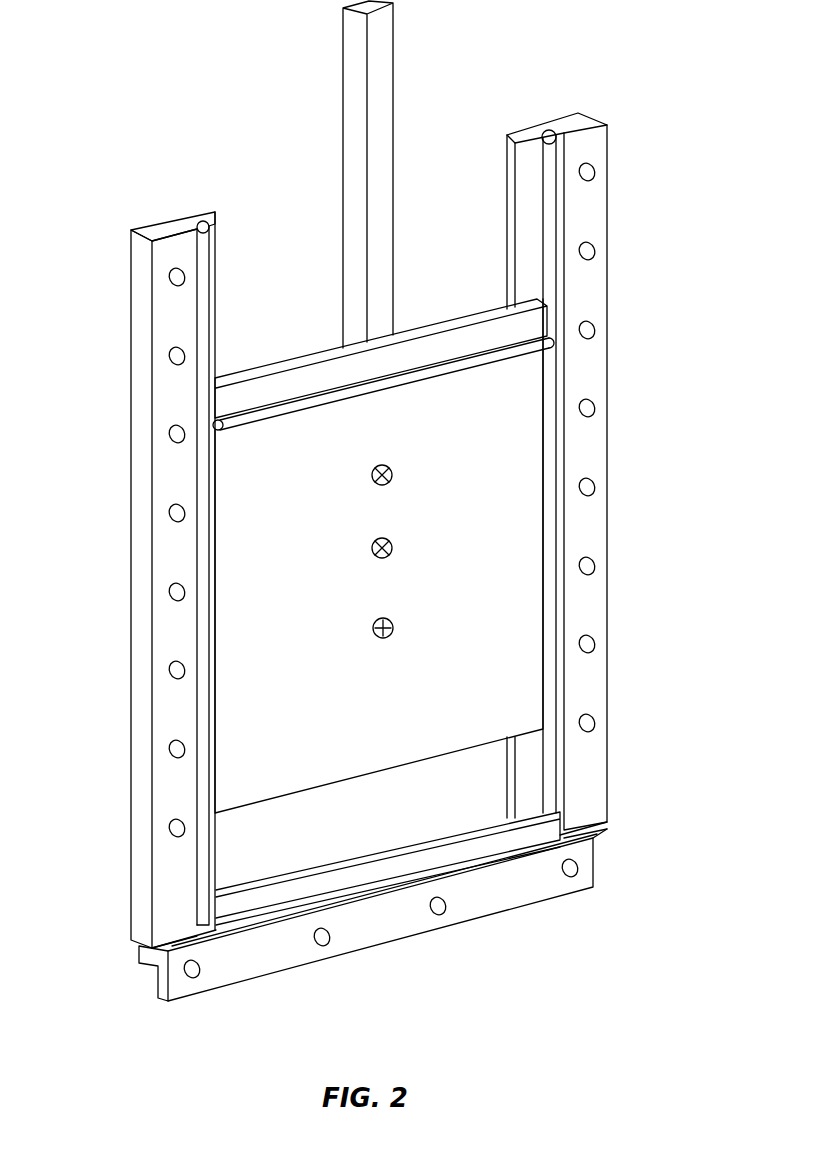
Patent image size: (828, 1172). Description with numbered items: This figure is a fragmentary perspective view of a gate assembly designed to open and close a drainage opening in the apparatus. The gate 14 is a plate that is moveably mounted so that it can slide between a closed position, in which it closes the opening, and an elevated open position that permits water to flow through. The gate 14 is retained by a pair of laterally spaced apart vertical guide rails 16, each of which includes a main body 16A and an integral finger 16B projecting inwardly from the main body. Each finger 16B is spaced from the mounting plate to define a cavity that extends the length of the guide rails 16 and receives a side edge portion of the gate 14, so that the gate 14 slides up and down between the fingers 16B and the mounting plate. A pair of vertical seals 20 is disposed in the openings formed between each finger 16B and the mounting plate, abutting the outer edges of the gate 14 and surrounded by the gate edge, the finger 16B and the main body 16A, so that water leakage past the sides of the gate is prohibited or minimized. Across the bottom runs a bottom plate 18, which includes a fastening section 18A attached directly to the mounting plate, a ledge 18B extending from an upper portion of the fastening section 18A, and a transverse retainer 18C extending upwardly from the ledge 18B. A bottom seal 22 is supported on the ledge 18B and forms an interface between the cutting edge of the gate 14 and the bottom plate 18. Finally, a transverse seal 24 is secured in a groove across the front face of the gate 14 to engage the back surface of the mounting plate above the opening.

The gate 14 is at (462, 645).
The vertical guide rail 16 is at (143, 393).
The main body 16A is at (162, 232).
The finger 16B is at (202, 220).
The bottom plate 18 is at (158, 963).
The fastening section 18A is at (257, 958).
The ledge 18B is at (490, 868).
The transverse retainer 18C is at (388, 853).
The vertical seal 20 is at (202, 313).
The bottom seal 22 is at (500, 845).
The seal 24 is at (492, 352).